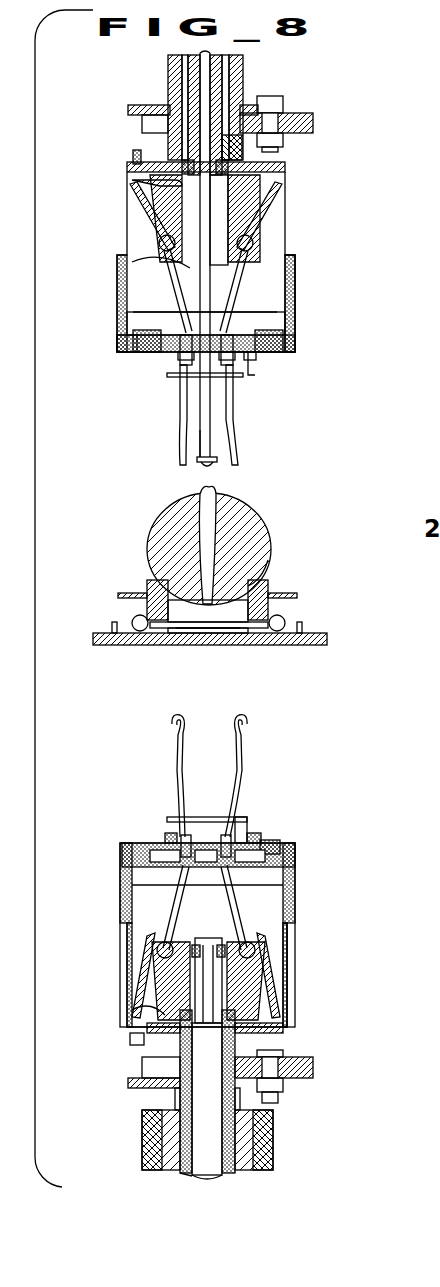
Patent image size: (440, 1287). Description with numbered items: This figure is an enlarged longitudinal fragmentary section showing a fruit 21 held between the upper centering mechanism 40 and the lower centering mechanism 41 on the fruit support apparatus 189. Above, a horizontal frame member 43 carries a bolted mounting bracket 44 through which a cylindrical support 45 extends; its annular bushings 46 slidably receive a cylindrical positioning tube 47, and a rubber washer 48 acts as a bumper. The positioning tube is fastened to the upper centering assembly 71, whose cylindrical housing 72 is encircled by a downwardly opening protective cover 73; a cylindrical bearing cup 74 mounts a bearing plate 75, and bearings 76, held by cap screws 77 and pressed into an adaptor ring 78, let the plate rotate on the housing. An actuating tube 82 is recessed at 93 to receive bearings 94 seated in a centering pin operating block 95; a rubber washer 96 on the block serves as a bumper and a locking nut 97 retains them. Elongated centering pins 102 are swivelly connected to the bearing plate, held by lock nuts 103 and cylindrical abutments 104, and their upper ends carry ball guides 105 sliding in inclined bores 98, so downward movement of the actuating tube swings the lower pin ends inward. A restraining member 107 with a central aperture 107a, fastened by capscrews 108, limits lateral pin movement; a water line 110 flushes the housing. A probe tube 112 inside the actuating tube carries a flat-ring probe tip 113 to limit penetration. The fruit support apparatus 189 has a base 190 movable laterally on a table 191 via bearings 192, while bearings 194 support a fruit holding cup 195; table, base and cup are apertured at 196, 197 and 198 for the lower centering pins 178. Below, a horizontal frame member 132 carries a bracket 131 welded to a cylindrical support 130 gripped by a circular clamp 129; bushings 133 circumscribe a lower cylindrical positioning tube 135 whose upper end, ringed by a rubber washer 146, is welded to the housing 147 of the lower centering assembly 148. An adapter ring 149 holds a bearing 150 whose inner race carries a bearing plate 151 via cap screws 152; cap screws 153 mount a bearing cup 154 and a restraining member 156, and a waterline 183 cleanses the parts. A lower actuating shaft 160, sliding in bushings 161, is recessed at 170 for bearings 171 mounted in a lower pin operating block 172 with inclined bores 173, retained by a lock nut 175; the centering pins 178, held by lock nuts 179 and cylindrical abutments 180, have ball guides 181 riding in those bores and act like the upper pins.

The upper centering mechanism 40 is at (385, 106).
The cylindrical positioning tube 47 is at (183, 65).
The cylindrical support 45 is at (243, 62).
The actuating tube 82 is at (218, 80).
The mounting bracket 44 is at (140, 105).
The horizontal frame member 43 is at (313, 125).
The rubber washer 48 is at (170, 160).
The water line 110 is at (132, 156).
The annular bushings 46 is at (242, 152).
The cylindrical housing 72 is at (286, 166).
The upper centering assembly 71 is at (118, 318).
The rubber washer 96 is at (135, 180).
The bearings 94 is at (285, 176).
The centering pin operating block 95 is at (282, 198).
The recess 93 is at (250, 222).
The inclined bores 98 is at (140, 208).
The ball guides 105 is at (160, 248).
The locking nut 97 is at (180, 268).
The cylindrical abutment 104 is at (220, 332).
The cylindrical bearing cup 74 is at (296, 290).
The protective cover 73 is at (296, 318).
The bearings 76 is at (297, 344).
The capscrews 108 is at (298, 360).
The adaptor ring 78 is at (122, 352).
The cap screws 77 is at (174, 360).
The lock nuts 103 is at (232, 370).
The bearing plate 75 is at (265, 368).
The restraining member 107 is at (175, 373).
The central aperture 107a is at (237, 405).
The centering fingers or pins 102 is at (195, 425).
The probe tube 112 is at (200, 447).
The probe tip 113 is at (198, 462).
The ball 21 is at (283, 504).
The aperture 198 is at (262, 570).
The fruit holding cup 195 is at (150, 592).
The bearings 194 is at (272, 620).
The base 190 is at (134, 618).
The fruit support apparatus 189 is at (286, 624).
The bearings 192 is at (236, 636).
The table 191 is at (318, 644).
The aperture 196 is at (196, 635).
The aperture 197 is at (200, 648).
The lower centering mechanism 41 is at (293, 782).
The elongated centering pins 178 is at (209, 772).
The restraining member 156 is at (175, 817).
The lock nuts 179 is at (190, 842).
The cap screws 152 is at (162, 838).
The bearing plate 151 is at (262, 842).
The cap screws 153 is at (276, 843).
The bearing 150 is at (296, 852).
The adapter ring 149 is at (122, 858).
The bearing cup 154 is at (125, 891).
The lower centering assembly 148 is at (298, 905).
The cylindrical abutments 180 is at (205, 892).
The lock nut 175 is at (200, 948).
The ball guides 181 is at (158, 944).
The inclined bores 173 is at (150, 958).
The recess 170 is at (165, 982).
The spaced bearings 171 is at (255, 990).
The rubber washer 146 is at (140, 1008).
The lower pin operating block 172 is at (290, 1008).
The housing 147 is at (288, 1030).
The waterline 183 is at (130, 1040).
The bushings 133 is at (240, 1048).
The bushings 161 is at (180, 1050).
The horizontal frame member 132 is at (313, 1077).
The bracket 131 is at (130, 1082).
The cylindrical support 130 is at (165, 1106).
The circular clamp 129 is at (262, 1158).
The lower cylindrical positioning tube 135 is at (185, 1176).
The lower actuating shaft 160 is at (210, 1176).